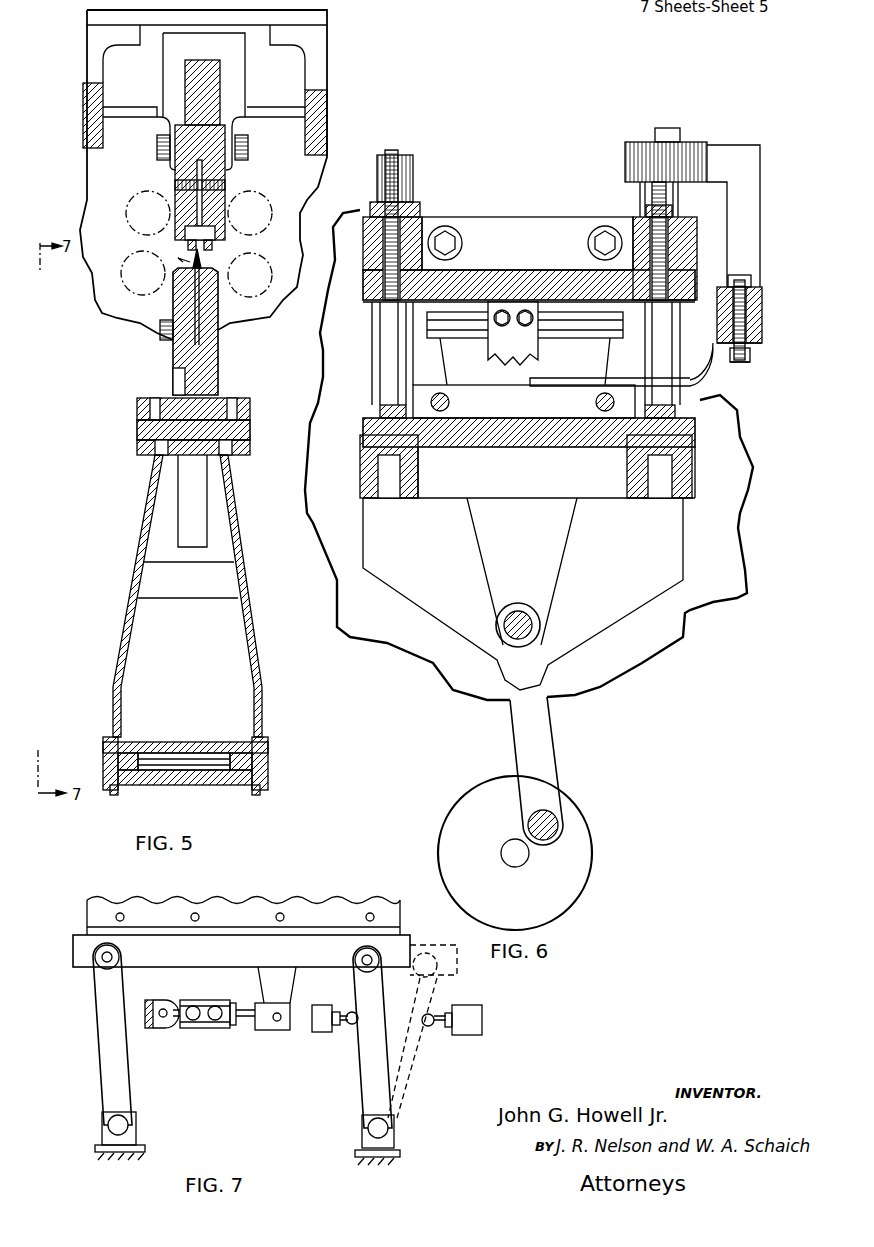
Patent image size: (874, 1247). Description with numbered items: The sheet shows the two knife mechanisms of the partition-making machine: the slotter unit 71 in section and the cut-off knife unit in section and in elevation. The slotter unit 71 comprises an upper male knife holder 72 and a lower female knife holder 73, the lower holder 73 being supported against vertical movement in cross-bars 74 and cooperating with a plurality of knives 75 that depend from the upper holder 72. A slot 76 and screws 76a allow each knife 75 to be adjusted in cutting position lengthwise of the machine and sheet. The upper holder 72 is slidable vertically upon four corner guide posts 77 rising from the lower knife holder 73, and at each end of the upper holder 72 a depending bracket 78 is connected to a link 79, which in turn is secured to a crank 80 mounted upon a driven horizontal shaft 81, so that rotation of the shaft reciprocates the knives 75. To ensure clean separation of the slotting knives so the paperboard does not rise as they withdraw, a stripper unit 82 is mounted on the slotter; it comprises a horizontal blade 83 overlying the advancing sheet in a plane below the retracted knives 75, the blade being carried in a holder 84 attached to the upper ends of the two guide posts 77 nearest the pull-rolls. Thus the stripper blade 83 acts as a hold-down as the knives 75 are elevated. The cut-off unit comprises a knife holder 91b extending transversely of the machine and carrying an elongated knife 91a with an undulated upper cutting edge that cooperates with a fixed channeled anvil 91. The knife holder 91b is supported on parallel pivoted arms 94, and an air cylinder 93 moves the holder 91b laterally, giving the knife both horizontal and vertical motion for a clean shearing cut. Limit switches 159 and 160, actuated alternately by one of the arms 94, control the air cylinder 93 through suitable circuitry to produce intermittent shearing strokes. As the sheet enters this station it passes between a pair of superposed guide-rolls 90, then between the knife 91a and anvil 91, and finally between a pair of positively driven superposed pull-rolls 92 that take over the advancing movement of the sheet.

In FIG. 6, the slotter unit 71 is at (531, 206).
In FIG. 6, the upper male knife holder 72 is at (492, 282).
In FIG. 6, the lower female knife holder 73 is at (490, 441).
In FIG. 6, the cross-bars 74 is at (404, 492).
In FIG. 6, the knives 75 is at (516, 356).
In FIG. 6, the slot 76 is at (541, 332).
In FIG. 6, the screws 76a is at (522, 326).
In FIG. 6, the corner guide posts 77 is at (391, 162).
In FIG. 6, the depending bracket 78 is at (552, 578).
In FIG. 6, the link 79 is at (548, 735).
In FIG. 6, the crank 80 is at (591, 829).
In FIG. 6, the driven horizontal shaft 81 is at (522, 856).
In FIG. 6, the stripper unit 82 is at (772, 336).
In FIG. 6, the stripper blade 83 is at (562, 383).
In FIG. 6, the blade holder 84 is at (762, 306).
In FIG. 5, the guide-rolls 90 is at (263, 211).
In FIG. 5, the channeled anvil 91 is at (205, 245).
In FIG. 5, the knife 91a is at (188, 263).
In FIG. 7, the knife 91a is at (250, 901).
In FIG. 5, the knife holder 91b is at (210, 366).
In FIG. 7, the knife holder 91b is at (100, 921).
In FIG. 5, the pull-rolls 92 is at (128, 262).
In FIG. 7, the air cylinder 93 is at (189, 1031).
In FIG. 5, the pivoted arms 94 is at (140, 573).
In FIG. 7, the pivoted arms 94 is at (105, 1031).
In FIG. 7, the limit switch 159 is at (318, 1032).
In FIG. 7, the limit switch 160 is at (455, 1032).